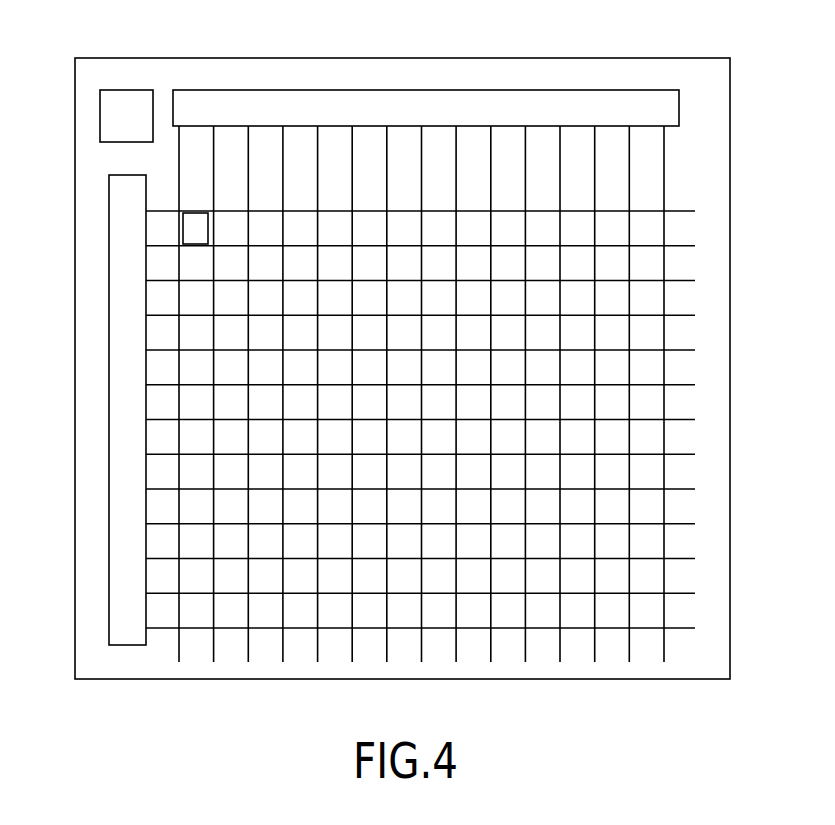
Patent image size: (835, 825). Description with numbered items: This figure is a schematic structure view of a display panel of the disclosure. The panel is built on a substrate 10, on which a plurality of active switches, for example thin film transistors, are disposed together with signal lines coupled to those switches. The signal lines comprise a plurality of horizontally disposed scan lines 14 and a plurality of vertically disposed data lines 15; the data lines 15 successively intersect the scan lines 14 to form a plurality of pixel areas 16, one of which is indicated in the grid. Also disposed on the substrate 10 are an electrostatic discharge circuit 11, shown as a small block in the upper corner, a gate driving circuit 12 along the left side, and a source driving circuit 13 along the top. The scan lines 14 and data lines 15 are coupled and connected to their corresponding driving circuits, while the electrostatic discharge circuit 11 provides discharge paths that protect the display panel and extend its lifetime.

The substrate 10 is at (700, 92).
The electrostatic discharge circuit 11 is at (125, 113).
The gate driving circuit 12 is at (128, 497).
The source driving circuit 13 is at (467, 105).
The scan lines 14 is at (683, 280).
The data lines 15 is at (665, 186).
The pixel areas 16 is at (193, 228).